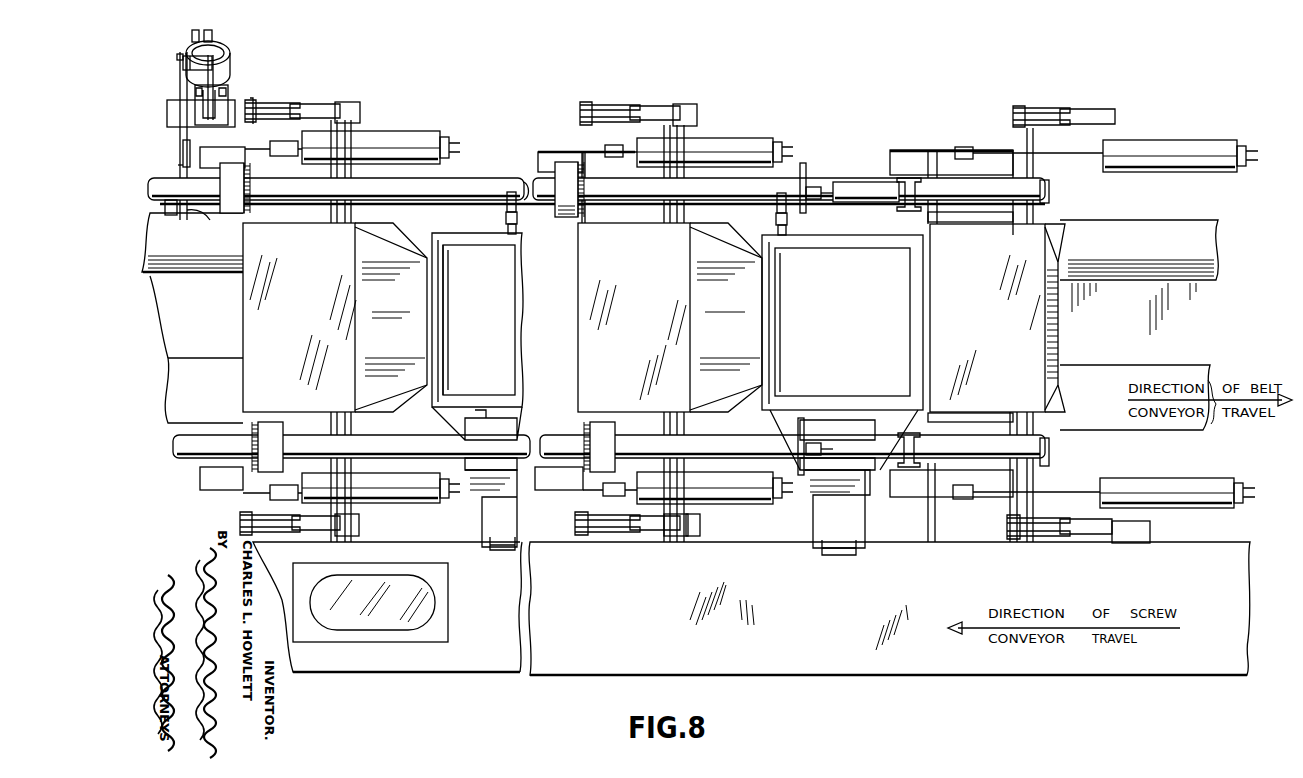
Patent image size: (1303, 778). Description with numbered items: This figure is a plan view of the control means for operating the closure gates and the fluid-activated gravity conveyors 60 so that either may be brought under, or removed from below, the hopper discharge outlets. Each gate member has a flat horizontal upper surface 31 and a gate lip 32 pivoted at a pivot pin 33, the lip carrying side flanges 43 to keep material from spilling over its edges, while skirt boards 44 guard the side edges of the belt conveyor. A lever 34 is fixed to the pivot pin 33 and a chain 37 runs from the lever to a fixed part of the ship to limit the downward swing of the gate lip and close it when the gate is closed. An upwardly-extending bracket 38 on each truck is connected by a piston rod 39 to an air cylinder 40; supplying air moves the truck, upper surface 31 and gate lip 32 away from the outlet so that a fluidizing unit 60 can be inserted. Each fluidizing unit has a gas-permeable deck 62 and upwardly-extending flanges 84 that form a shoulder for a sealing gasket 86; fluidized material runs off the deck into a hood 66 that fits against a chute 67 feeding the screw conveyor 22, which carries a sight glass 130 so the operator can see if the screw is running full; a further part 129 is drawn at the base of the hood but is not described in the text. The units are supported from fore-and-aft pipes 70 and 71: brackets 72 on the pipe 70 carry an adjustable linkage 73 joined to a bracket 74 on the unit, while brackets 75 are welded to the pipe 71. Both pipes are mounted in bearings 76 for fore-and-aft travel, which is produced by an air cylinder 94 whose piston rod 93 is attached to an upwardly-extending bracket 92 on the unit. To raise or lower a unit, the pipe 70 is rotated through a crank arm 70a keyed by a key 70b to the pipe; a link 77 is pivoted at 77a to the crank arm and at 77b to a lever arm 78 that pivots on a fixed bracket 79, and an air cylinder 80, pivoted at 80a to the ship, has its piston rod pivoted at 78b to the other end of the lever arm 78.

The screw conveyor 22 is at (884, 675).
The flat horizontal upper surface 31 is at (302, 333).
The gate lip 32 is at (390, 313).
The pivot pin 33 is at (690, 125).
The lever 34 is at (348, 104).
The chain 37 is at (296, 104).
The upwardly-extending bracket 38 is at (562, 150).
The piston rod 39 is at (630, 146).
The air cylinder 40 is at (400, 134).
The side flanges 43 is at (398, 232).
The skirt boards 44 is at (152, 276).
The fluid-activated gravity conveyor 60 is at (563, 305).
The gas-permeable deck 62 is at (500, 330).
The hood 66 is at (482, 518).
The chute 67 is at (1150, 536).
The pipe 70 is at (503, 176).
The crank arm 70a is at (200, 208).
The key 70b is at (172, 208).
The pipe 71 is at (416, 451).
The brackets 72 is at (507, 196).
The adjustable linkage 73 is at (506, 218).
The bracket 74 is at (516, 230).
The brackets 75 is at (522, 472).
The bearings 76 is at (570, 222).
The link 77 is at (170, 108).
The pivotal connection 77a is at (183, 150).
The pivotal connection 77b is at (180, 58).
The lever arm 78 is at (225, 62).
The pivotal connection 78b is at (214, 118).
The bracket 79 is at (224, 108).
The air cylinder 80 is at (218, 62).
The pivotal connection 80a is at (208, 30).
The upwardly-extending flanges 84 is at (446, 380).
The sealing gasket 86 is at (438, 310).
The upwardly-extending bracket 92 is at (803, 165).
The piston rod 93 is at (822, 186).
The air cylinder 94 is at (864, 184).
The clip 129 is at (514, 550).
The sight glass 130 is at (440, 620).